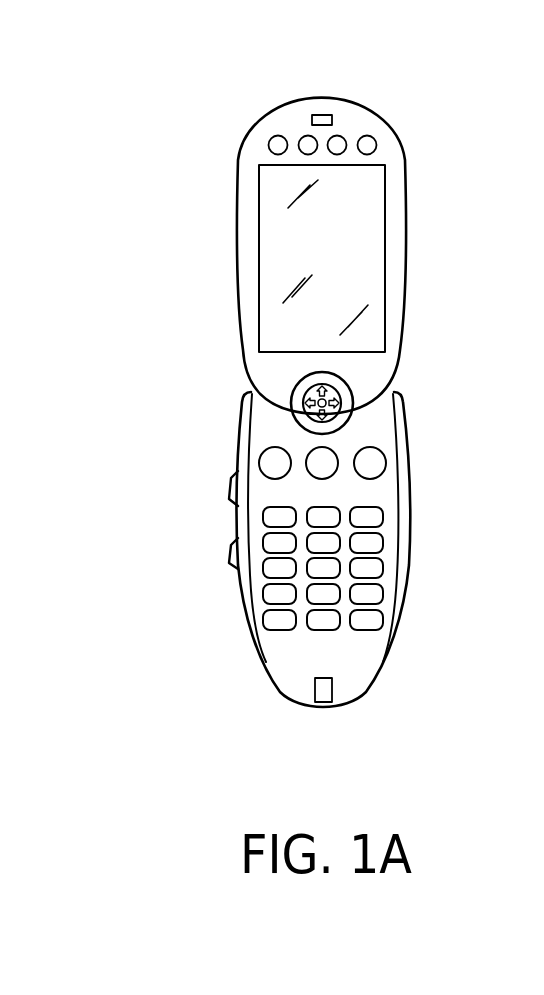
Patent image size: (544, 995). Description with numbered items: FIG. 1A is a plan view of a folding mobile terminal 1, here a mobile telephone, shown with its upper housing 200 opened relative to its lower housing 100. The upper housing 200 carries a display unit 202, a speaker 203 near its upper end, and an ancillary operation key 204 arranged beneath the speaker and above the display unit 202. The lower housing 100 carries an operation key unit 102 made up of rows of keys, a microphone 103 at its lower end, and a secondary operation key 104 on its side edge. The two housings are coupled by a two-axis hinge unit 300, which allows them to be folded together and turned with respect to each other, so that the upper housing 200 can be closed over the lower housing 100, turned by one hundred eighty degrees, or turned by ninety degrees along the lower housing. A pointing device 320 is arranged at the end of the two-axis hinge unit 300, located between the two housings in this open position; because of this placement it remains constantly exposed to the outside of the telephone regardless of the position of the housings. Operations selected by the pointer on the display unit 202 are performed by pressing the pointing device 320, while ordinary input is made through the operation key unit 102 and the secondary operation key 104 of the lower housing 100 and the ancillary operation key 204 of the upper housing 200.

The mobile terminal 1 is at (327, 400).
The lower housing 100 is at (278, 681).
The operation key unit 102 is at (265, 590).
The microphone 103 is at (322, 703).
The secondary operation key 104 is at (233, 542).
The upper housing 200 is at (398, 222).
The display unit 202 is at (278, 270).
The speaker 203 is at (317, 113).
The ancillary operation key 204 is at (268, 145).
The 2-axis hinge unit 300 is at (356, 383).
The pointing device 320 is at (338, 414).